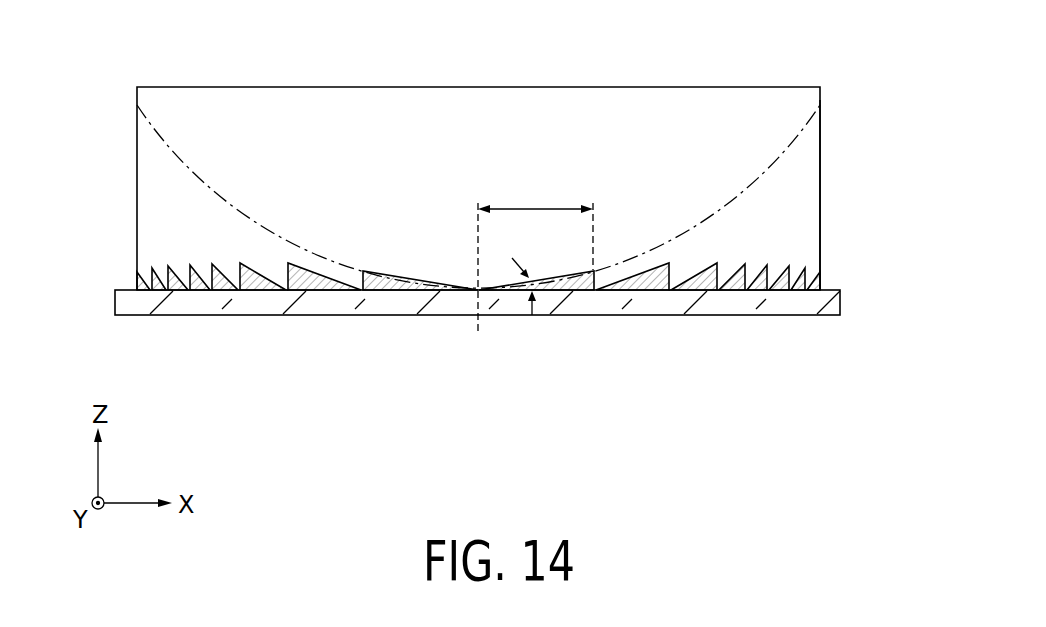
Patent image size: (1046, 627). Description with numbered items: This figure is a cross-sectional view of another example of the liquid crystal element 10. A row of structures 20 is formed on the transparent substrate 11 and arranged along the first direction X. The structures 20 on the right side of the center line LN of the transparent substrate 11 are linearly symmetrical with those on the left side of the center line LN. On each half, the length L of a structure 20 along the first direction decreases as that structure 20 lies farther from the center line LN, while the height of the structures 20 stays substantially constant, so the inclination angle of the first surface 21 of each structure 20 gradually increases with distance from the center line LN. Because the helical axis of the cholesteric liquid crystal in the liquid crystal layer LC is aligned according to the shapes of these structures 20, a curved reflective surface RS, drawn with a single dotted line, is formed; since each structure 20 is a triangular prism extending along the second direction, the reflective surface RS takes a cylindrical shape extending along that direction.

The liquid crystal element 10 is at (846, 69).
The transparent substrate 11 is at (842, 294).
The structures 20 is at (257, 292).
The first surface 21 is at (580, 265).
The liquid crystal layer LC is at (813, 182).
The reflective surface RS is at (747, 183).
The center line LN is at (479, 285).
The prism pitch length L is at (535, 225).